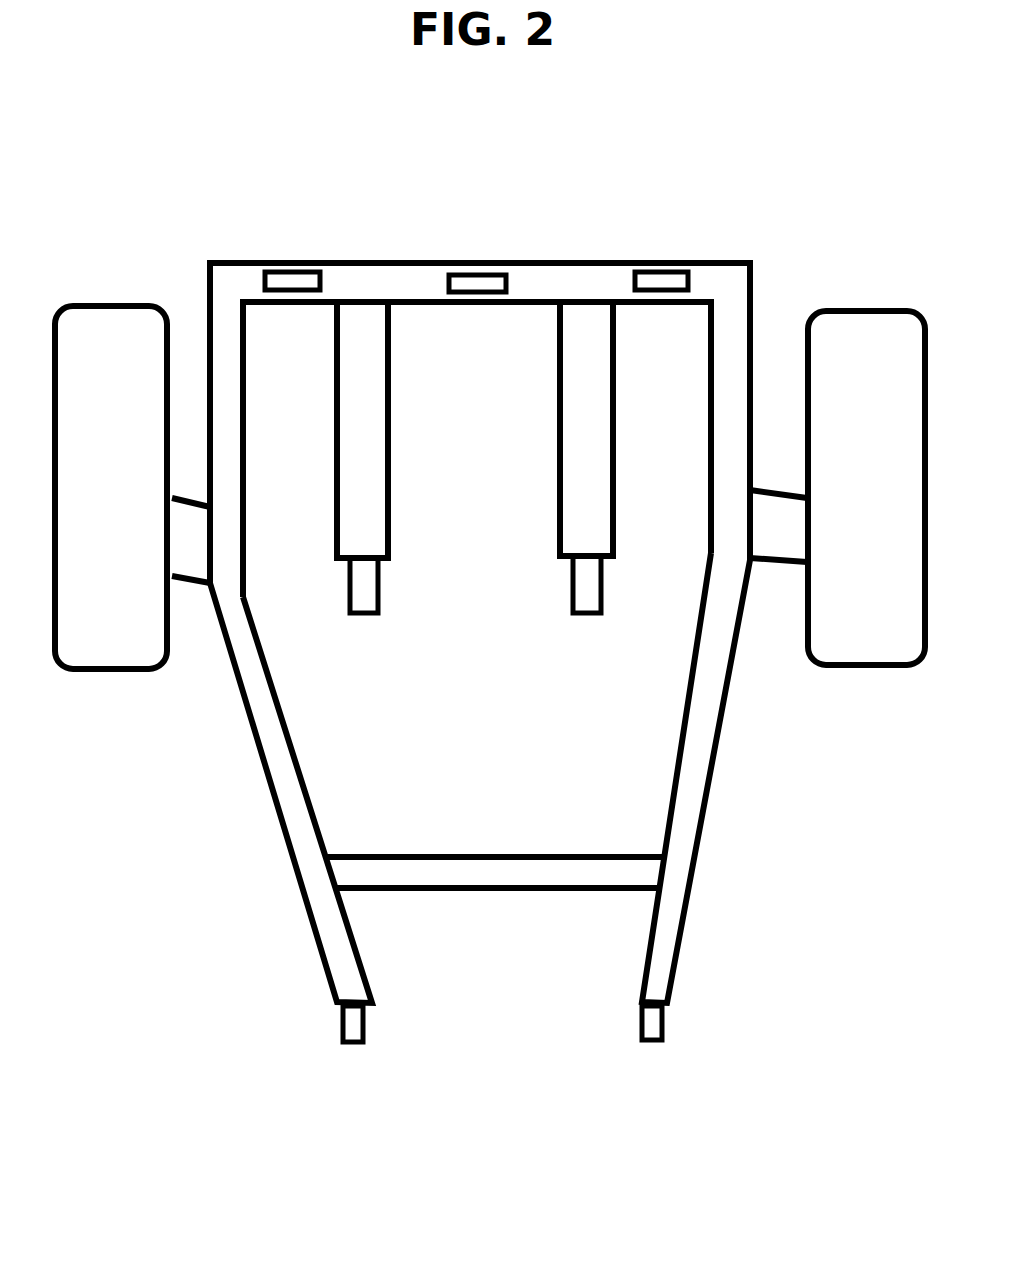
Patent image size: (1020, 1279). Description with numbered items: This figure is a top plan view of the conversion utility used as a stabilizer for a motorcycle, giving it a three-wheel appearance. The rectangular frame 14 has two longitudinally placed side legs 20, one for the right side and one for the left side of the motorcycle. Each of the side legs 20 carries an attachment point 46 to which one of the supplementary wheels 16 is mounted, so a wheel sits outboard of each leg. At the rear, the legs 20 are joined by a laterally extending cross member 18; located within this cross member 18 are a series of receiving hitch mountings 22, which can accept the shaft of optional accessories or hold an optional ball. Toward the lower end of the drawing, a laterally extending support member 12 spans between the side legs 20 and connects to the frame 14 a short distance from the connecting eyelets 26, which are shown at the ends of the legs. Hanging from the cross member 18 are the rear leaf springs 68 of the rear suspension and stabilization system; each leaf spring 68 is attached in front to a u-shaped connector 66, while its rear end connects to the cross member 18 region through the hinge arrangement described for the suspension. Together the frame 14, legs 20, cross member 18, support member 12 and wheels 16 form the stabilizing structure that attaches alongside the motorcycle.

The support member 12 is at (493, 873).
The frame 14 is at (592, 250).
The supplementary wheels 16 is at (887, 300).
The cross member 18 is at (350, 275).
The side legs 20 is at (290, 800).
The receiving hitch mountings 22 is at (660, 283).
The connecting eyelets 26 is at (352, 1028).
The attachment point 46 is at (185, 587).
The u-shaped connector 66 is at (350, 590).
The rear leaf springs 68 is at (335, 447).